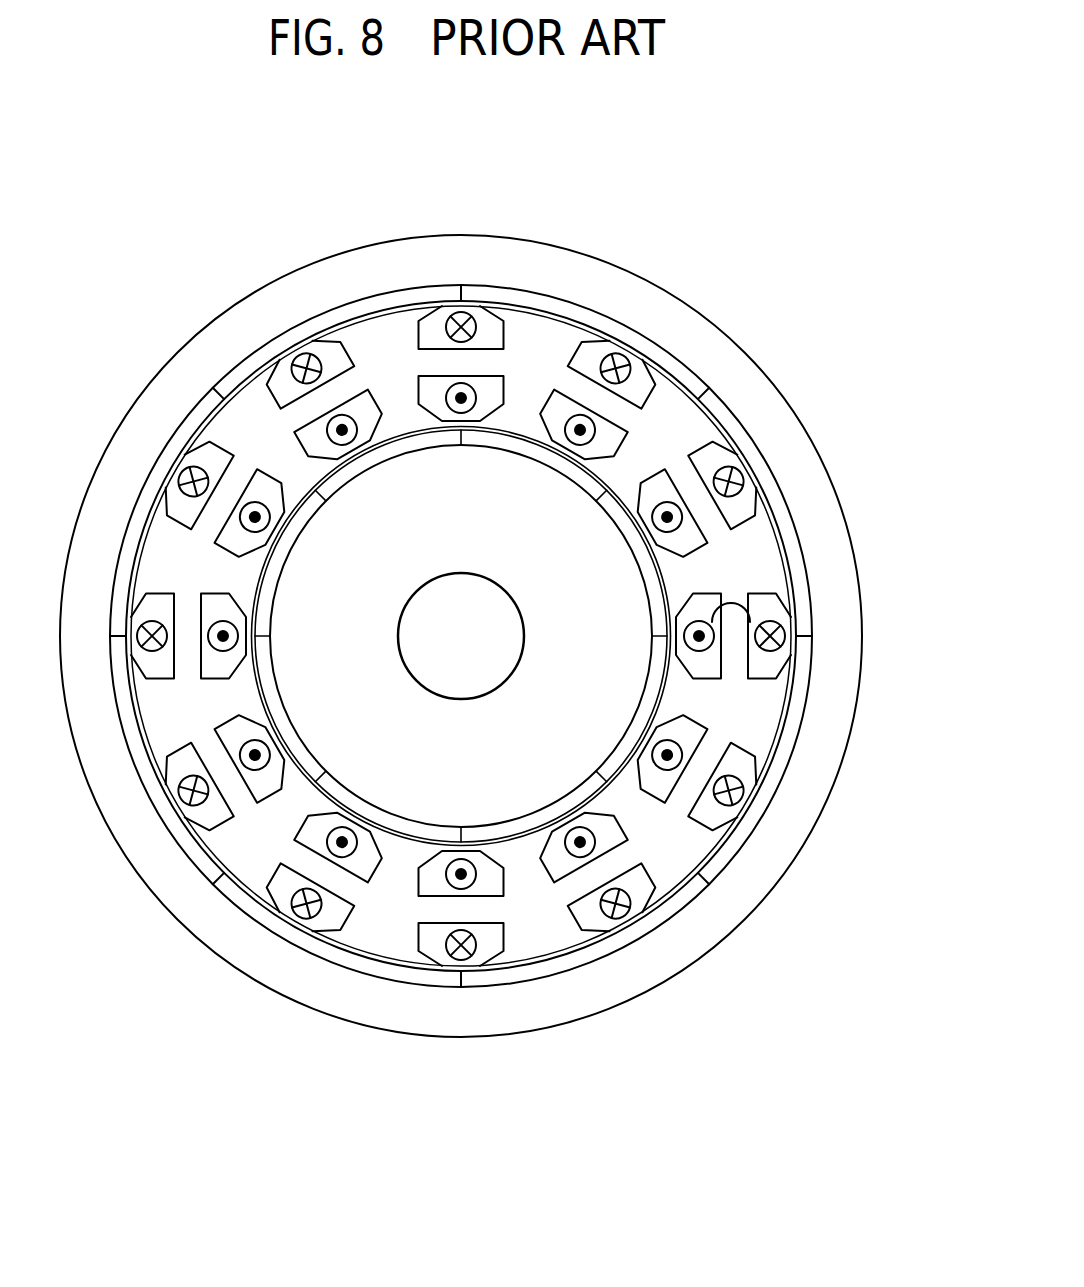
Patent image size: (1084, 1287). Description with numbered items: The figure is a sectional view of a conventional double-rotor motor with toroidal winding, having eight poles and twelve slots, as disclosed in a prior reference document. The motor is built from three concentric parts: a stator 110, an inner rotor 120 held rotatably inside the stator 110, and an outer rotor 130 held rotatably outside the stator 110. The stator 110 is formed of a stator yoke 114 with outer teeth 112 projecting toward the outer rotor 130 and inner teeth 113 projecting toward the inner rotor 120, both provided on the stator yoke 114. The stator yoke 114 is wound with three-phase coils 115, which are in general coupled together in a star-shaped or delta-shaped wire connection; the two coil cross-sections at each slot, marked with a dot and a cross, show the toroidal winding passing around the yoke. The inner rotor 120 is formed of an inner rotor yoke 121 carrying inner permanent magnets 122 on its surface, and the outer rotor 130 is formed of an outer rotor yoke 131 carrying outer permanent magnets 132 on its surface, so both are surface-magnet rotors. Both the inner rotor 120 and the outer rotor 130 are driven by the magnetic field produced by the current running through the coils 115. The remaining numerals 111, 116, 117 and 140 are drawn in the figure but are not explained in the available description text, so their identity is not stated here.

The stator 110 is at (530, 616).
The stator core 111 is at (707, 522).
The outer teeth 112 is at (759, 833).
The inner teeth 113 is at (677, 690).
The stator yoke 114 is at (802, 619).
The three-phase coils 115 is at (690, 618).
The insulator outer flange 116 is at (702, 817).
The insulator inner flange 117 is at (653, 787).
The inner rotor 120 is at (471, 766).
The inner rotor yoke 121 is at (448, 806).
The inner permanent magnets 122 is at (440, 826).
The outer rotor 130 is at (365, 245).
The outer rotor yoke 131 is at (513, 260).
The outer permanent magnets 132 is at (597, 320).
The shaft hole 140 is at (432, 670).